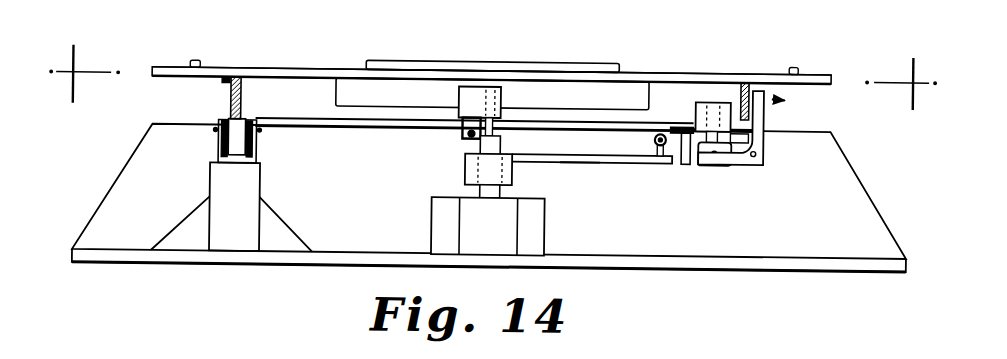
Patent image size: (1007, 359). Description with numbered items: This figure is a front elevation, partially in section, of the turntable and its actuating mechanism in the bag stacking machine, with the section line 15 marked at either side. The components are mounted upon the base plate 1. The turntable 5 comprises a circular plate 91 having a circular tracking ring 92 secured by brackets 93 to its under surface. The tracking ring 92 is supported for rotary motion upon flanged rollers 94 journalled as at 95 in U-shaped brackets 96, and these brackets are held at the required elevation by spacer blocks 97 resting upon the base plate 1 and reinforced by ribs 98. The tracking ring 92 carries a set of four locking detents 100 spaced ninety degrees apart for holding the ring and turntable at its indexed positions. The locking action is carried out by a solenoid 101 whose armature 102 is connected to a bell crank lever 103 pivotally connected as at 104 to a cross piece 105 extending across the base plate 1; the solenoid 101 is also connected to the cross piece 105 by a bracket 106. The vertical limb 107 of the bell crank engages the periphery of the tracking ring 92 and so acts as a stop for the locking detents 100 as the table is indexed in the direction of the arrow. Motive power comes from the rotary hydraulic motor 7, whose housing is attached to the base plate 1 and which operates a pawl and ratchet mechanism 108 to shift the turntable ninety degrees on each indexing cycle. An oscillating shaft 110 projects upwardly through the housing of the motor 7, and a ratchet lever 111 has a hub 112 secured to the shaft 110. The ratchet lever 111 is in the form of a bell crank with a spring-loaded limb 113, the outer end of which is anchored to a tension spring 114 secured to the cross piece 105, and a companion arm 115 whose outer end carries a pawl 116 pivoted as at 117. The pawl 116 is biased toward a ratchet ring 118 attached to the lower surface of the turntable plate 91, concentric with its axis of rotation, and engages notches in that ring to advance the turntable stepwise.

The base plate 1 is at (806, 265).
The turntable 5 is at (666, 71).
The rotary hydraulic motor 7 is at (488, 226).
The section line 15- 15 is at (492, 68).
The circular plate 91 is at (309, 71).
The tracking ring 92 is at (234, 71).
The brackets 93 is at (221, 84).
The flanged rollers 94 is at (237, 146).
The journal 95 is at (213, 131).
The U-shaped brackets 96 is at (228, 153).
The spacer blocks 97 is at (235, 245).
The ribs 98 is at (280, 235).
The locking detents 100 is at (752, 92).
The solenoid 101 is at (700, 100).
The armature 102 is at (732, 161).
The bell crank lever 103 is at (767, 163).
The pivot 104 is at (756, 151).
The cross piece 105 is at (853, 194).
The bracket 106 is at (688, 125).
The vertical limb 107 is at (763, 110).
The pawl and ratchet mechanism 108 is at (418, 95).
The oscillating shaft 110 is at (493, 195).
The ratchet lever 111 is at (584, 170).
The hub 112 is at (465, 173).
The spring-loaded limb 113 is at (627, 162).
The tension spring 114 is at (653, 141).
The companion arm 115 is at (502, 153).
The pawl 116 is at (473, 92).
The pawl pivot 117 is at (505, 98).
The ratchet ring 118 is at (587, 91).